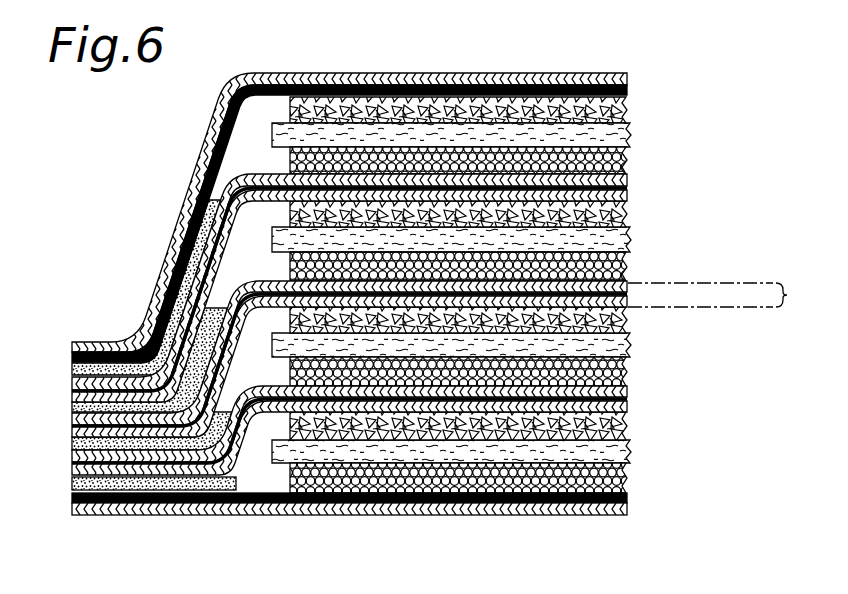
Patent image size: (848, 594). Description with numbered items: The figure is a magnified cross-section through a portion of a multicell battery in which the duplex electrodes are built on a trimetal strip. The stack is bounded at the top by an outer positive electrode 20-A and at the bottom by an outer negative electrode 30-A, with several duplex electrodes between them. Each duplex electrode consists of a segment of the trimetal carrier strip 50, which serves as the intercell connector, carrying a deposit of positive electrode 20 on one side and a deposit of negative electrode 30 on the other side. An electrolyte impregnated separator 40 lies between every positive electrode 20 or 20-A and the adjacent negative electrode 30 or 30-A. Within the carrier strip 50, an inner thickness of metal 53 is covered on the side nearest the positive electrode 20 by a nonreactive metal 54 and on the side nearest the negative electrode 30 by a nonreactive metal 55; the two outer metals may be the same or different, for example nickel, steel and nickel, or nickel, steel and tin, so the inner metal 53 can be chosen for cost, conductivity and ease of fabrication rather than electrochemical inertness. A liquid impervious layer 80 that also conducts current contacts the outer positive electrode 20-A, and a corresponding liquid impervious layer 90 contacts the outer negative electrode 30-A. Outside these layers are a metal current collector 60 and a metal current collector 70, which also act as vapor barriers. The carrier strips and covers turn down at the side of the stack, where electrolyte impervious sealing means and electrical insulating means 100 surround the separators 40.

The positive electrode 20 is at (627, 217).
The outer positive electrode 20-A is at (627, 112).
The negative electrode 30 is at (627, 160).
The outer negative electrode 30-A is at (627, 478).
The electrolyte impregnated separator 40 is at (631, 131).
The trimetal carrier strip 50 is at (725, 296).
The inner thickness of metal 53 is at (627, 188).
The nonreactive metal 54 is at (627, 197).
The nonreactive metal 55 is at (627, 178).
The metal current collector 60 is at (627, 78).
The metal current collector 70 is at (627, 512).
The liquid impervious layer 80 is at (627, 90).
The liquid impervious layer 90 is at (627, 498).
The electrolyte impervious sealing means and electrical insulating means 100 is at (72, 405).